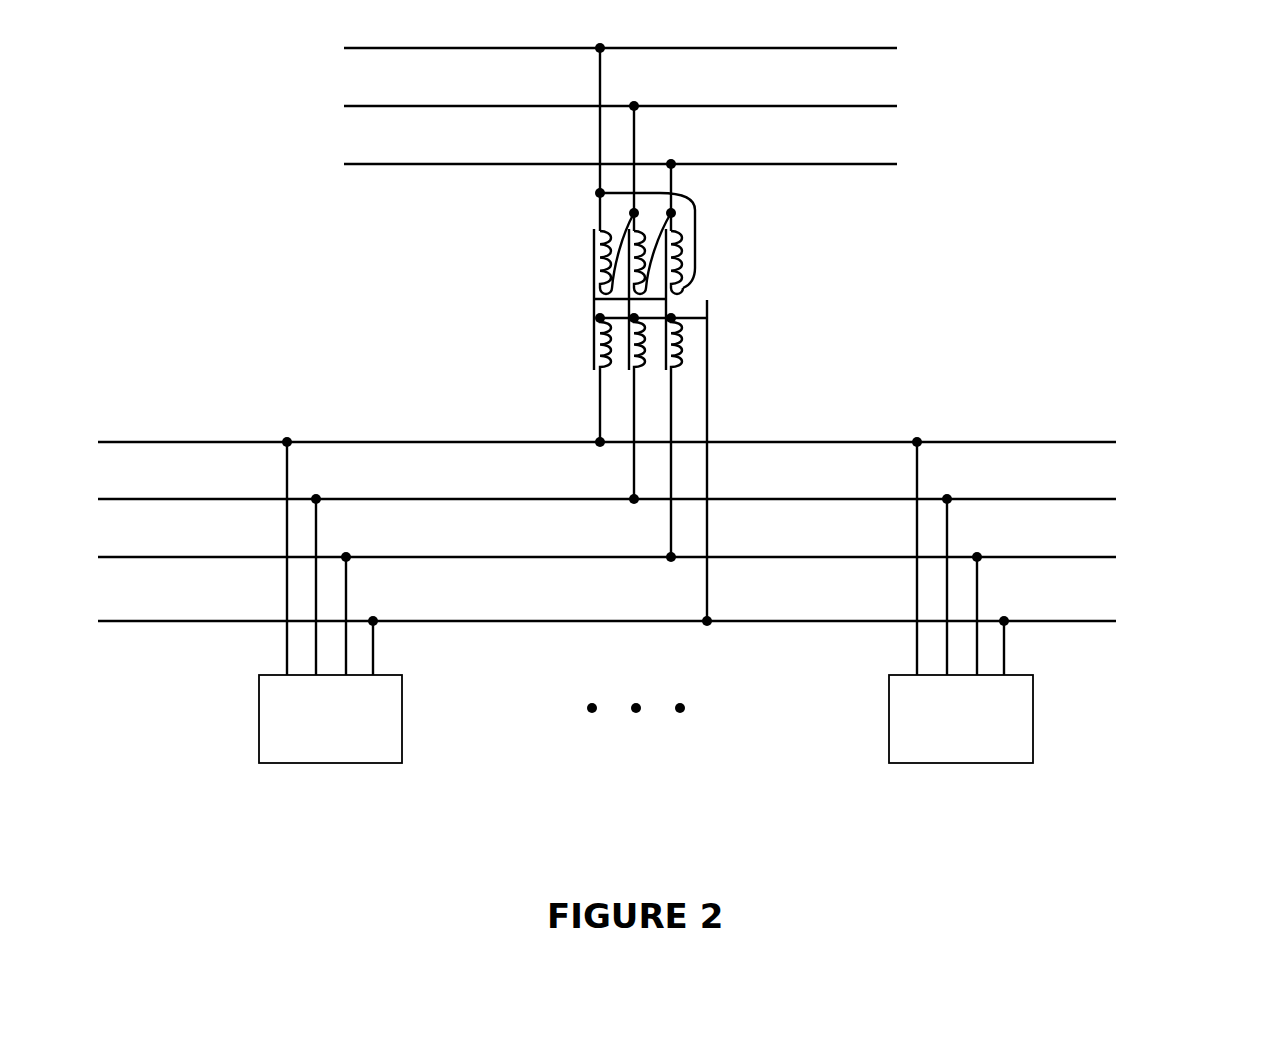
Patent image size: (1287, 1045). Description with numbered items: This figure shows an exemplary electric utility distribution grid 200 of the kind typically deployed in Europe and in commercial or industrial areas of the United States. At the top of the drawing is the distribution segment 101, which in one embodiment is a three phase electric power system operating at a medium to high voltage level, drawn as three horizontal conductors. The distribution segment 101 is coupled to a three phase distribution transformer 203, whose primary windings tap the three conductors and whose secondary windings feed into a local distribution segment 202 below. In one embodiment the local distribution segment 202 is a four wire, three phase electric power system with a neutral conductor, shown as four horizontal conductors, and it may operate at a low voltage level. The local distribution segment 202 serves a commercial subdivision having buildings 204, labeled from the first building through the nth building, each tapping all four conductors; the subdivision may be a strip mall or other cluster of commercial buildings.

The electric utility distribution grid 200 is at (1178, 75).
The distribution segment 101 is at (910, 40).
The three phase distribution transformer 203 is at (713, 222).
The local distribution segment 202 is at (1118, 623).
The buildings B1-Bn 204 is at (1090, 775).